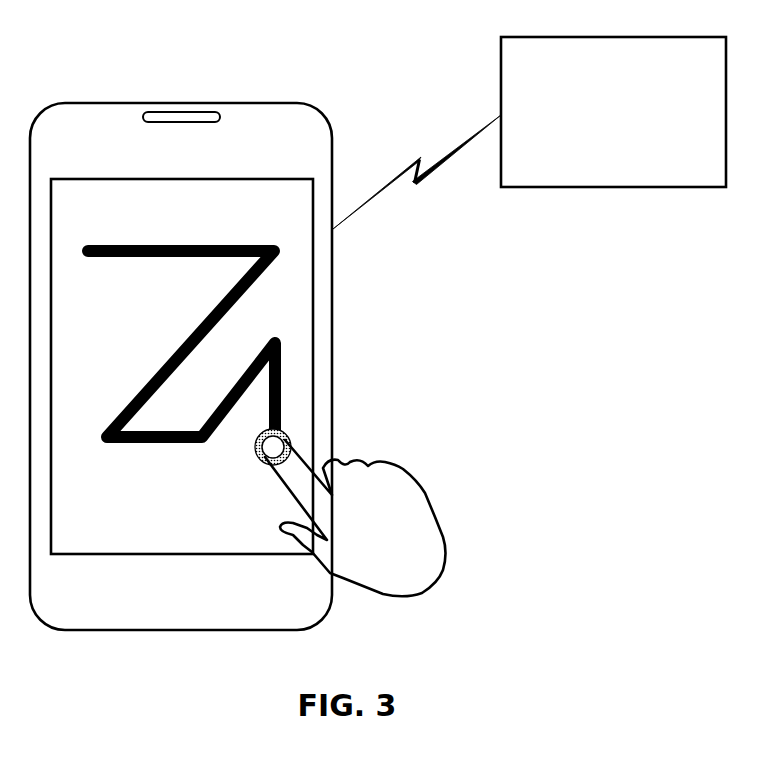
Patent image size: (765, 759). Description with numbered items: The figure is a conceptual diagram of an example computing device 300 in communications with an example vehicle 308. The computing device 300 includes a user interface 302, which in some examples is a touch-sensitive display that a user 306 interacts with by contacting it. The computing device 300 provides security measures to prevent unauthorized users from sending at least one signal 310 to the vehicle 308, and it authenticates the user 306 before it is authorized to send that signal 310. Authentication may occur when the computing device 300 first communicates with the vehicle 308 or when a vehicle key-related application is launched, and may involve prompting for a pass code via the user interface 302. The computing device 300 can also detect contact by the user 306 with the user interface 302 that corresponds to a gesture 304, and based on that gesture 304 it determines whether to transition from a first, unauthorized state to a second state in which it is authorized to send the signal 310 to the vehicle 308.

The computing device 300 is at (233, 103).
The user interface 302 is at (177, 178).
The gesture 304 is at (151, 244).
The user 306 is at (426, 483).
The vehicle 308 is at (594, 139).
The signal 310 is at (417, 183).